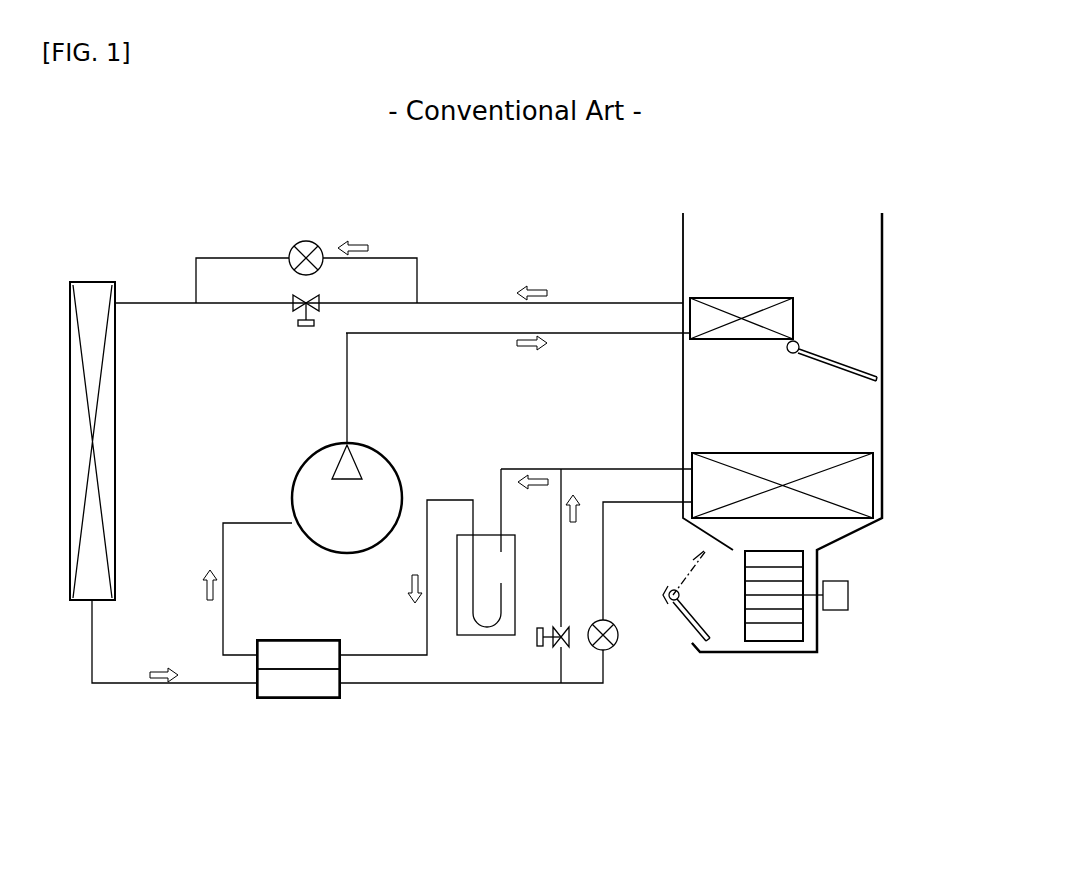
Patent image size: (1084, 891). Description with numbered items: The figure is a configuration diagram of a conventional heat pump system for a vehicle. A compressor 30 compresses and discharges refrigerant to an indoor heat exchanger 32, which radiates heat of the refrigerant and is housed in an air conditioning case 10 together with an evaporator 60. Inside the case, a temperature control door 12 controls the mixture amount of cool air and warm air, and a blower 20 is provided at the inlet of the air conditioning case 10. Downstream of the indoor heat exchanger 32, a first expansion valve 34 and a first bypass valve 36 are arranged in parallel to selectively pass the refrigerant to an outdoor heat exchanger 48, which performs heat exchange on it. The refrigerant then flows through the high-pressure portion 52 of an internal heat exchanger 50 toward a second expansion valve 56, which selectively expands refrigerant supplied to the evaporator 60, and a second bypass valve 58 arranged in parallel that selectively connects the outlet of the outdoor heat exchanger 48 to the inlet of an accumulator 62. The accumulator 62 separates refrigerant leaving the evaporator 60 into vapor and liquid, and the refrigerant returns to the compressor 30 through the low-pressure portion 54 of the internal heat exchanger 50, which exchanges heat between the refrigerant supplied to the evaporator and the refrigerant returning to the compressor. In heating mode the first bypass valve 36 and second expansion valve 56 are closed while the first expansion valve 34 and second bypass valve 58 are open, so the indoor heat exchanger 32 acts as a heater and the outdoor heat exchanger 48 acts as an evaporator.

The air conditioning case 10 is at (885, 300).
The temperature control door 12 is at (866, 366).
The blower 20 is at (805, 562).
The compressor 30 is at (315, 452).
The indoor heat exchanger 32 is at (740, 297).
The first expansion valve 34 is at (306, 240).
The first bypass valve 36 is at (307, 328).
The outdoor heat exchanger 48 is at (90, 278).
The internal heat exchanger 50 is at (336, 700).
The high-pressure portion 52 is at (283, 700).
The low-pressure portion 54 is at (282, 650).
The second expansion valve 56 is at (619, 638).
The second bypass valve 58 is at (541, 650).
The evaporator 60 is at (875, 487).
The accumulator 62 is at (488, 530).